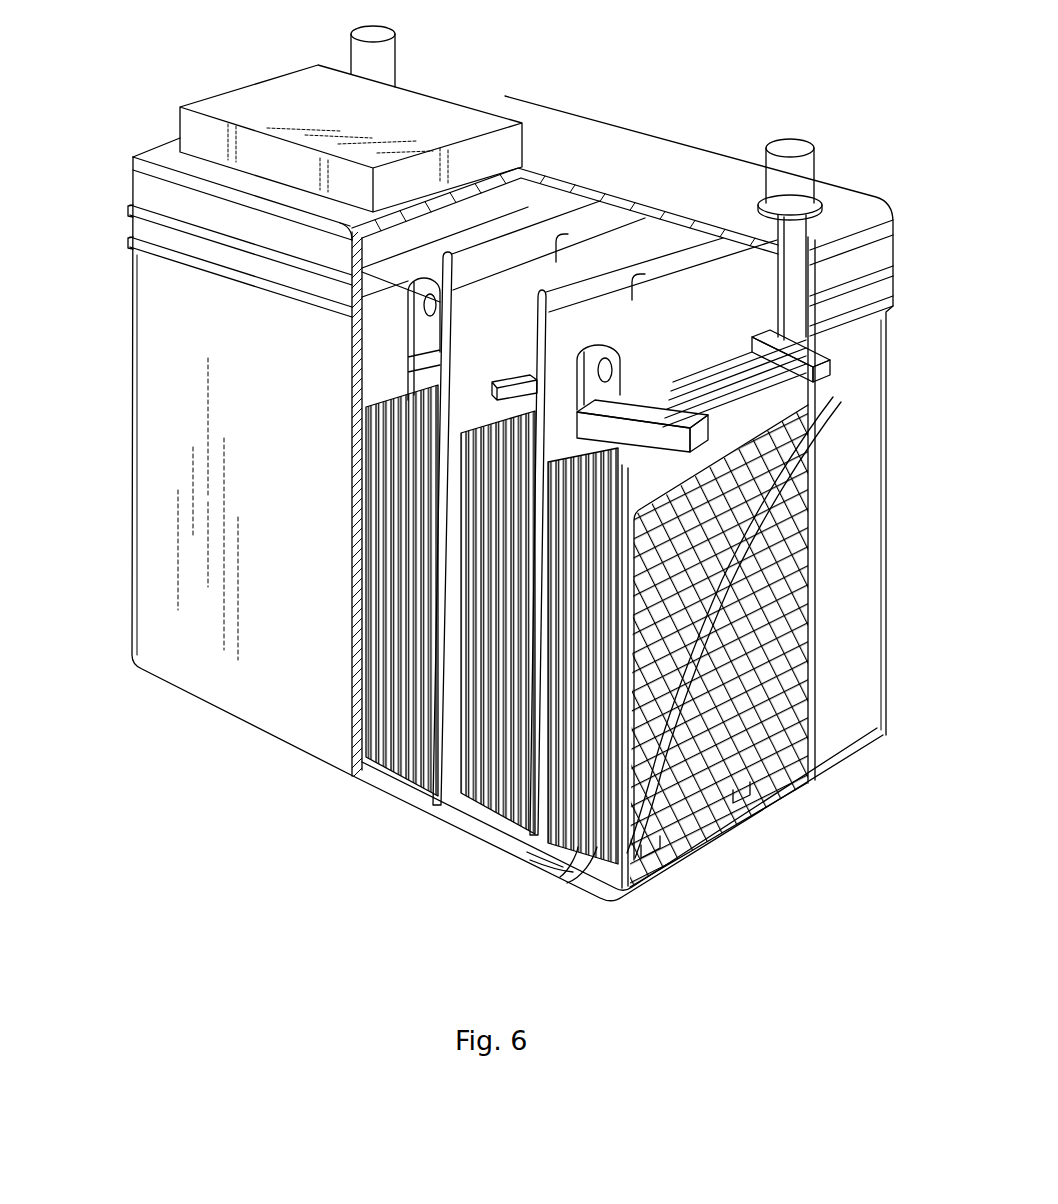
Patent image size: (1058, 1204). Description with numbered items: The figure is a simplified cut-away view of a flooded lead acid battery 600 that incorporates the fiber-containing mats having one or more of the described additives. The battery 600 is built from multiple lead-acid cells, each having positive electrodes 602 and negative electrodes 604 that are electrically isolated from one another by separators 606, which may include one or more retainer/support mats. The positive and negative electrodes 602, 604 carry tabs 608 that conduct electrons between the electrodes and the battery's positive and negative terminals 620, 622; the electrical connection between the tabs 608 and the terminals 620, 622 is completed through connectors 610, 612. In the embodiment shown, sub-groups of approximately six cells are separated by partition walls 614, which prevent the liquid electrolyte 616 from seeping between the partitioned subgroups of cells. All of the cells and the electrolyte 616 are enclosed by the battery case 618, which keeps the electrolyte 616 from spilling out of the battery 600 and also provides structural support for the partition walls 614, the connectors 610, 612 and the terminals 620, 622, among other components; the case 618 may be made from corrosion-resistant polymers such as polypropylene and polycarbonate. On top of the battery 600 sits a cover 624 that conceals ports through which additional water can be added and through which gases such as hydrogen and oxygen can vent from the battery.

The flooded lead acid battery 600 is at (513, 476).
The positive electrodes 602 is at (745, 675).
The negative electrodes 604 is at (740, 518).
The separators 606 is at (637, 868).
The tabs 608 is at (615, 440).
The connector 610 is at (823, 343).
The connector 612 is at (608, 343).
The partition walls 614 is at (408, 250).
The liquid electrolyte 616 is at (533, 206).
The battery case 618 is at (133, 310).
The positive terminal 620 is at (807, 170).
The negative terminal 622 is at (362, 50).
The cover 624 is at (257, 97).